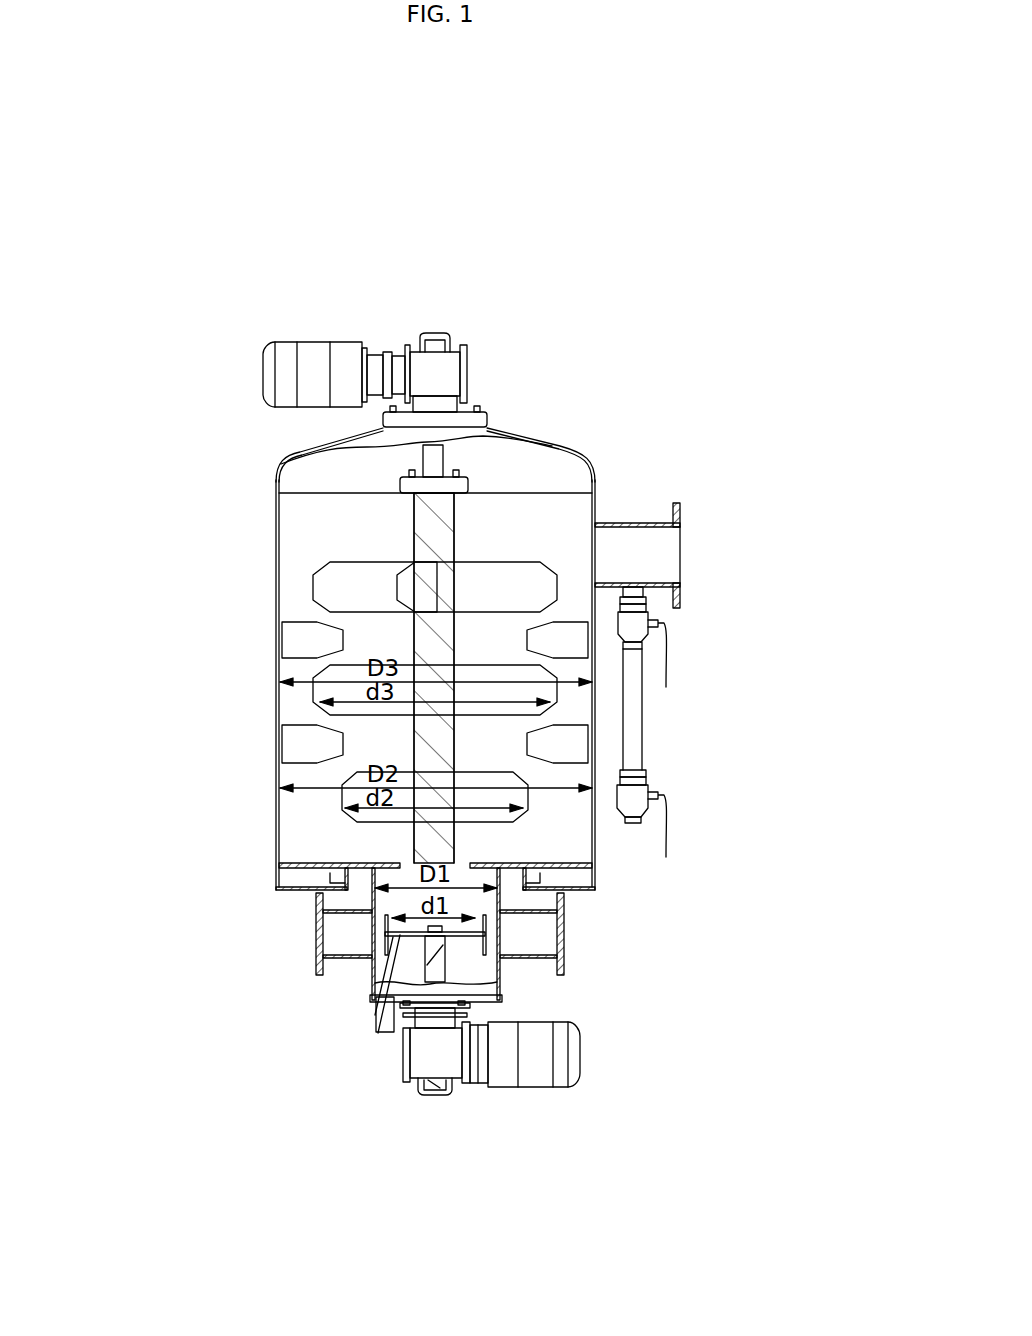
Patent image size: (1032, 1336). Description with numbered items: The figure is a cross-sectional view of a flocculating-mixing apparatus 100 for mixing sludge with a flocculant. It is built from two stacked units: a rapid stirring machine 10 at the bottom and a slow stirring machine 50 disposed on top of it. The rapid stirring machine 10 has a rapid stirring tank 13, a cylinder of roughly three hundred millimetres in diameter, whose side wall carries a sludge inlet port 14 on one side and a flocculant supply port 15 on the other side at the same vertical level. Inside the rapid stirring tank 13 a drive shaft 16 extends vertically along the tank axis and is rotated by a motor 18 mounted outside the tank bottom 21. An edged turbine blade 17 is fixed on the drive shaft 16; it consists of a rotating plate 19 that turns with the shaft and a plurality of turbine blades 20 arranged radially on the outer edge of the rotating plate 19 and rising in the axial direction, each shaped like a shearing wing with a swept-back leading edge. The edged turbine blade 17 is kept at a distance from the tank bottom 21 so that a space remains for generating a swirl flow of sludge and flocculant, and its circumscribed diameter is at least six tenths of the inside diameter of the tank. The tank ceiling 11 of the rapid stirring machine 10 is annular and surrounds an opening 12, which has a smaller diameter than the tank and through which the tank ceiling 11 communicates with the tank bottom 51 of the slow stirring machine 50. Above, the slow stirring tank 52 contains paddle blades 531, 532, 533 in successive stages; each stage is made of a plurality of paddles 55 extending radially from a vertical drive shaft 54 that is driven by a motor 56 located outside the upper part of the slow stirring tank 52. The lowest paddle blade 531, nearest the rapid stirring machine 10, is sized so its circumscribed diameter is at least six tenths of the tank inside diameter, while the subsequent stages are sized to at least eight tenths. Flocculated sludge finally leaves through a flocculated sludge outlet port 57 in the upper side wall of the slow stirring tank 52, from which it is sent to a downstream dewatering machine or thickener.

The flocculating-mixing apparatus 100 is at (568, 438).
The motor 56 is at (333, 354).
The slow stirring tank 52 is at (275, 585).
The slow stirring machine 50 is at (255, 707).
The paddles 55 is at (447, 535).
The drive shaft 54 is at (540, 560).
The paddle blade 533 is at (705, 408).
The paddle blade 532 is at (773, 565).
The paddle blade 531 is at (773, 668).
The flocculated sludge outlet port 57 is at (681, 551).
The opening 12 is at (530, 806).
The tank ceiling 11 is at (490, 866).
The tank bottom 51 is at (560, 871).
The sludge inlet port 14 is at (316, 934).
The flocculant supply port 15 is at (562, 930).
The rapid stirring tank 13 is at (372, 973).
The rapid stirring machine 10 is at (346, 997).
The drive shaft 16 is at (502, 970).
The tank bottom 21 is at (503, 1006).
The motor 18 is at (507, 1088).
The edged turbine blade 17 is at (332, 1098).
The rotating plate 19 is at (400, 990).
The turbine blades 20 is at (375, 1003).